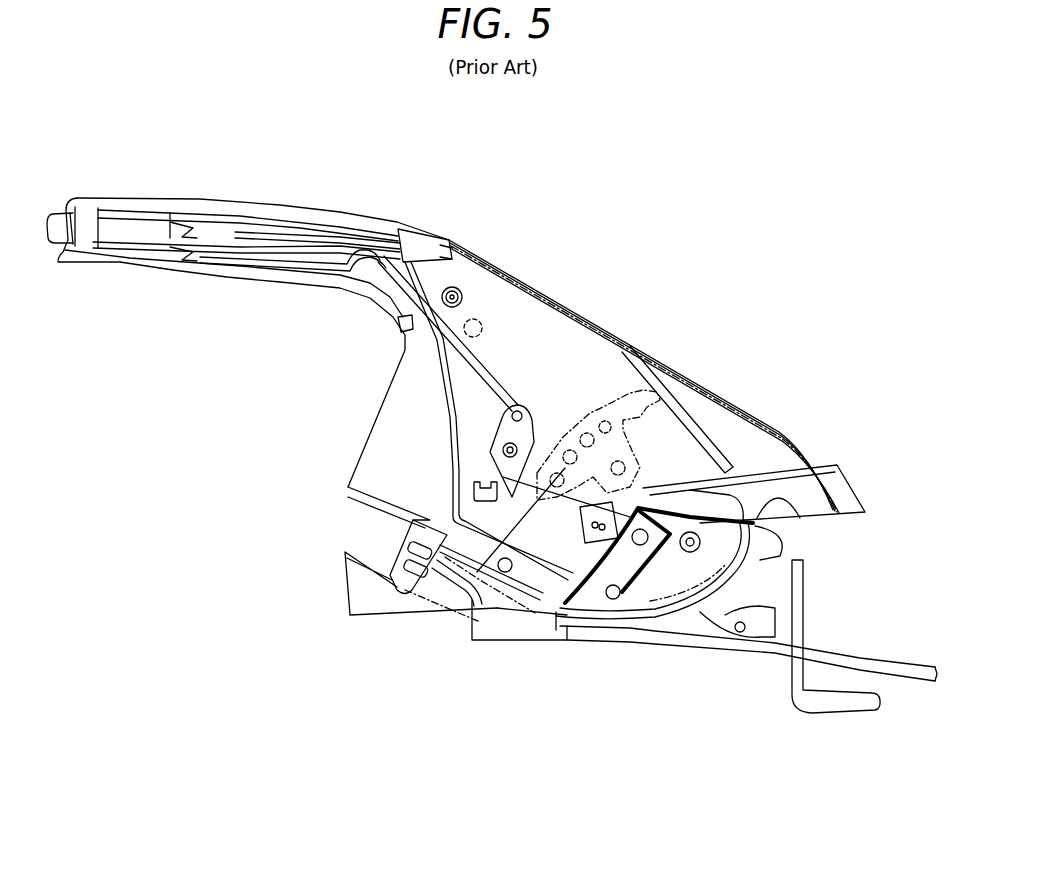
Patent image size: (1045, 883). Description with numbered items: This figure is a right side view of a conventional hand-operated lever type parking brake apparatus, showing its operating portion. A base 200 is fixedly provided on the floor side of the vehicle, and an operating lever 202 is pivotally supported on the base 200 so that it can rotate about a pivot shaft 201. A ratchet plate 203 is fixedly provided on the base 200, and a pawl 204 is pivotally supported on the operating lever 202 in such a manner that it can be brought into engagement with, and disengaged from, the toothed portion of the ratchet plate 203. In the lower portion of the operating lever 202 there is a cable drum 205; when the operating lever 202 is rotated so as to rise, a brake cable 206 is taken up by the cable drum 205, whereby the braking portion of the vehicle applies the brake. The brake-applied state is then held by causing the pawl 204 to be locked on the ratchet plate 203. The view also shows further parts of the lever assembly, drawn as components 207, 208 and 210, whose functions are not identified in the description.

The base 200 is at (492, 623).
The pivot shaft 201 is at (778, 546).
The operating lever 202 is at (510, 266).
The ratchet plate 203 is at (645, 400).
The pawl 204 is at (527, 412).
The cable drum 205 is at (638, 612).
The brake cable 206 is at (755, 655).
The connecting strip 207 is at (405, 262).
The release rod 208 is at (167, 240).
The release button 210 is at (60, 227).